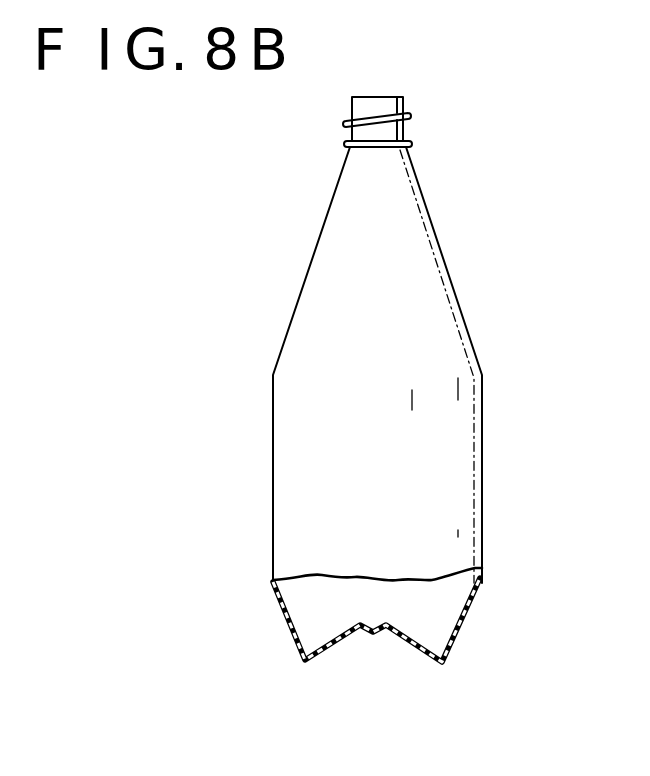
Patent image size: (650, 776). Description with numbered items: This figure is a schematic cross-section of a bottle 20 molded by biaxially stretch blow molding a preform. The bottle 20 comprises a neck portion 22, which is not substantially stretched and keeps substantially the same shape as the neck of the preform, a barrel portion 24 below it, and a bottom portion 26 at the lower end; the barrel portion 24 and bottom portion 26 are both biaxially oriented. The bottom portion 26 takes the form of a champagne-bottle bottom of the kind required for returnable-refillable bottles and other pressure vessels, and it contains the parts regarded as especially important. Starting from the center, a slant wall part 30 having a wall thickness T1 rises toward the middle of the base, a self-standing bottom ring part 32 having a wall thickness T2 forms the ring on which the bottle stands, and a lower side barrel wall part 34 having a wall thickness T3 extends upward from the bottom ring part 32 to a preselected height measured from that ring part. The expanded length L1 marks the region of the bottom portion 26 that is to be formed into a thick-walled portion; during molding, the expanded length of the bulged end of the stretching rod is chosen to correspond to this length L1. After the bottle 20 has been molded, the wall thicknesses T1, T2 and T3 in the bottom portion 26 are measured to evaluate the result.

The bottle 20 is at (478, 104).
The neck portion 22 is at (404, 128).
The barrel portion 24 is at (447, 324).
The bottom portion 26 is at (410, 620).
The slant wall part 30 is at (413, 652).
The self-standing bottom ring part 32 is at (444, 672).
The lower side barrel wall part 34 is at (459, 640).
The wall thickness of slant wall part T1 is at (340, 641).
The wall thickness of self-standing bottom ring part T2 is at (307, 633).
The wall thickness of lower side barrel wall part T3 is at (284, 645).
The expanded length of thick-walled region L1 is at (500, 660).